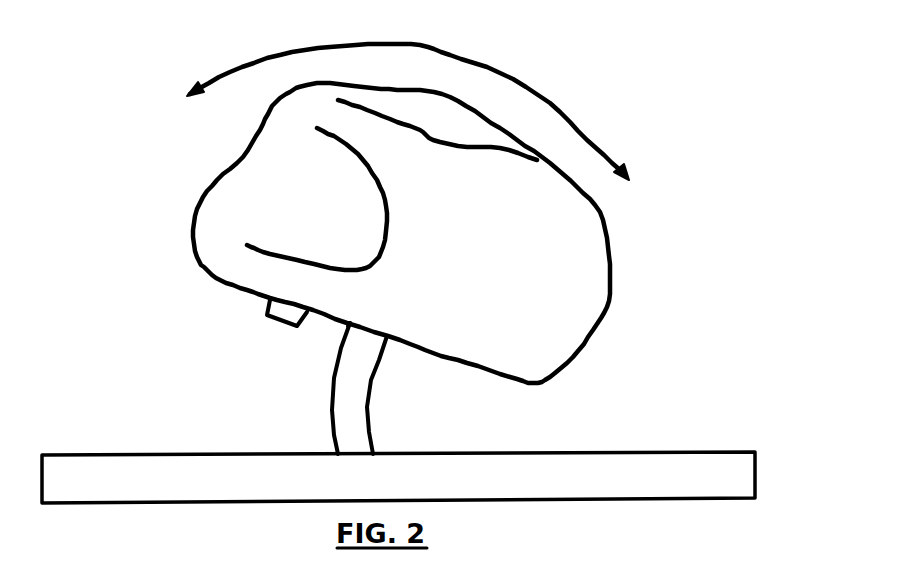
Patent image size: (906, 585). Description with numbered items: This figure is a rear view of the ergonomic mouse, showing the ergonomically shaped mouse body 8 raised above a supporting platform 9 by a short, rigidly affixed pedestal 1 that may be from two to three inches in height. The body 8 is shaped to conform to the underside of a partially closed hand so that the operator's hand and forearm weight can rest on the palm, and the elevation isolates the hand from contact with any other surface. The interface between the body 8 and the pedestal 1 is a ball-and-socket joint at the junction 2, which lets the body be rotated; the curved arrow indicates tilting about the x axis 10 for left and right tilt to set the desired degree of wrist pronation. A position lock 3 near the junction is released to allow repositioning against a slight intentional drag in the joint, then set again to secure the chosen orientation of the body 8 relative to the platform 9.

The pedestal 1 is at (369, 412).
The ball-and-socket joint junction 2 is at (345, 327).
The position lock 3 is at (267, 314).
The ergonomic mouse body 8 is at (612, 287).
The supporting platform 9 is at (755, 470).
The x axis 10 is at (408, 112).